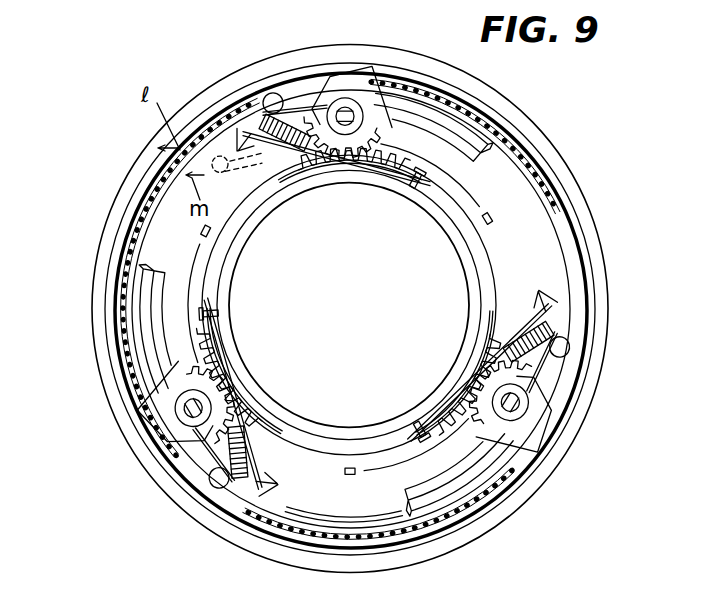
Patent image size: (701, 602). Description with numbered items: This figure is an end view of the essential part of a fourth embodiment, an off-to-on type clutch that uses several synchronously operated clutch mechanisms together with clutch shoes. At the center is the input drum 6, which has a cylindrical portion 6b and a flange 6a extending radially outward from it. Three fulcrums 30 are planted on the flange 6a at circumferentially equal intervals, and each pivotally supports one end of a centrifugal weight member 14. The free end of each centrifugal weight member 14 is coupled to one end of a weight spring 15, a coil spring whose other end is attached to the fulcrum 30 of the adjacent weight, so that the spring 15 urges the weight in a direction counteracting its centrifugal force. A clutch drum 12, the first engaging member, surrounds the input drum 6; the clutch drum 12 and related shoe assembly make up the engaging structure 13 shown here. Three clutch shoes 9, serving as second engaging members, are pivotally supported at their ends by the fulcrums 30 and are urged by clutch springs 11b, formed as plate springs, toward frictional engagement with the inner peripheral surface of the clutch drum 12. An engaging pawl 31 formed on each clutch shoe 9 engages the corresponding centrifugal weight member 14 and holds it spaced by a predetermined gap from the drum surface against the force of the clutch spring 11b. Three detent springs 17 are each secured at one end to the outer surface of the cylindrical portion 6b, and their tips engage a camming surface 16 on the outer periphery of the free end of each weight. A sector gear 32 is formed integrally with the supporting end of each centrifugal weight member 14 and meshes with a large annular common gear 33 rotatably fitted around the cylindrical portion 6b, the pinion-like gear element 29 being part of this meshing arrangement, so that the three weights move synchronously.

The input drum 6 is at (430, 231).
The flange 6a is at (313, 80).
The cylindrical portion 6b is at (470, 301).
The clutch shoe 9 is at (527, 150).
The clutch spring 11b is at (460, 127).
The clutch drum 12 is at (560, 172).
The brake assembly 13 is at (607, 95).
The centrifugal weight member 14 is at (170, 172).
The weight spring 15 is at (270, 100).
The camming surface 16 is at (270, 165).
The detent spring 17 is at (250, 140).
The pinion gear 29 is at (350, 112).
The fulcrum 30 is at (522, 408).
The engaging pawl 31 is at (240, 230).
The sector gear 32 is at (345, 167).
The common gear 33 is at (352, 173).